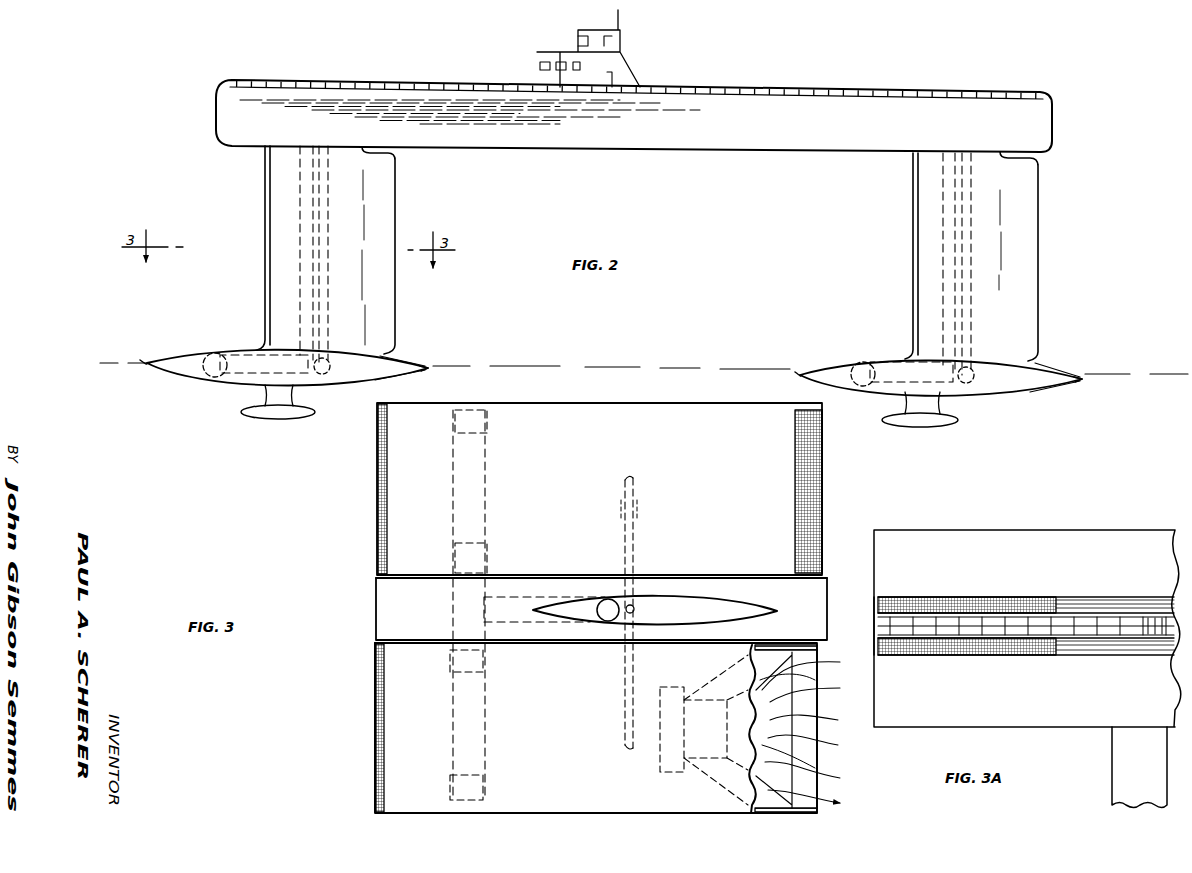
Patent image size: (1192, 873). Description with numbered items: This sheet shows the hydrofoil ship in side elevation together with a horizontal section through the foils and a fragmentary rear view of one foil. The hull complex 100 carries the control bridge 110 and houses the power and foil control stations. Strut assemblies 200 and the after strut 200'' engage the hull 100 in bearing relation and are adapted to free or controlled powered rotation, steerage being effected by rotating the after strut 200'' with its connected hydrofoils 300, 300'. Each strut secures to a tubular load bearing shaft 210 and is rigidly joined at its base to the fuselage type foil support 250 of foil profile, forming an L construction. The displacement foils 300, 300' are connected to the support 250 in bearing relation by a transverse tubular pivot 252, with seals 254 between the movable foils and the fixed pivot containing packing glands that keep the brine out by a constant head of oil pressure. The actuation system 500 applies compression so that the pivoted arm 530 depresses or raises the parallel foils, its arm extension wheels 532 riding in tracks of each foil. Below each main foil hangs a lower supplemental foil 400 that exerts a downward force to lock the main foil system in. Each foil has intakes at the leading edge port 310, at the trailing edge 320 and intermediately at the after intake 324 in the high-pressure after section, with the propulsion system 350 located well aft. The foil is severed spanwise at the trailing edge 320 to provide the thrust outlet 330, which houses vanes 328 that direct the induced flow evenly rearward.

In FIG. 2, the hull complex 100 is at (214, 104).
In FIG. 2, the control bridge 110 is at (537, 68).
In FIG. 2, the strut assembly 200 is at (304, 250).
In FIG. 3, the strut assembly 200 is at (655, 606).
In FIG. 2, the after strut 200'' is at (940, 256).
In FIG. 2, the tubular load bearing shaft 210 is at (300, 276).
In FIG. 3, the tubular load bearing shaft 210 is at (597, 610).
In FIG. 3, the fuselage type foil support 250 is at (374, 628).
In FIG. 3, the transverse tubular pivot 252 is at (484, 476).
In FIG. 3, the seals 254 is at (490, 425).
In FIG. 2, the main displacement foil 300 is at (614, 357).
In FIG. 3, the main displacement foil 300 is at (347, 727).
In FIG. 3A, the main displacement foil 300 is at (1027, 617).
In FIG. 3, the hydrofoil 300' is at (601, 597).
In FIG. 2, the forward intake port 310 is at (160, 352).
In FIG. 3, the forward intake port 310 is at (377, 481).
In FIG. 2, the trailing edge 320 is at (430, 369).
In FIG. 3, the trailing edge 320 is at (822, 505).
In FIG. 3A, the trailing edge 320 is at (882, 626).
In FIG. 2, the after intake port 324 is at (407, 376).
In FIG. 3, the after intake port 324 is at (794, 487).
In FIG. 3A, the after intake port 324 is at (1080, 605).
In FIG. 3, the vanes 328 is at (816, 744).
In FIG. 3A, the vanes 328 is at (1020, 640).
In FIG. 3A, the boundary layer control port 330 is at (1150, 620).
In FIG. 3, the propulsion system 350 is at (715, 738).
In FIG. 2, the lower supplemental foil 400 is at (244, 410).
In FIG. 3A, the lower supplemental foil 400 is at (1132, 746).
In FIG. 2, the actuation system 500 is at (330, 196).
In FIG. 3, the actuation system 500 is at (636, 609).
In FIG. 3, the pivoted arm 530 is at (624, 553).
In FIG. 3, the arm extension wheels 532 is at (636, 468).